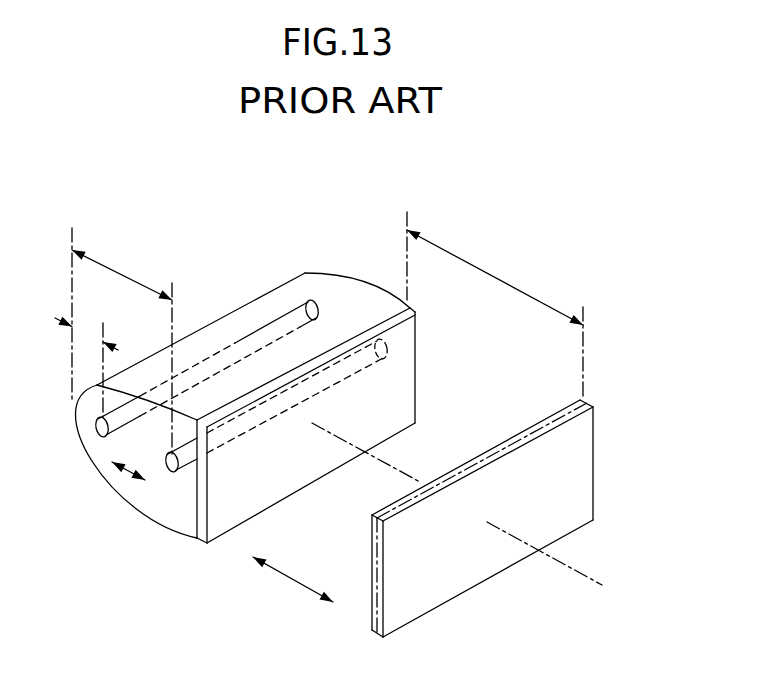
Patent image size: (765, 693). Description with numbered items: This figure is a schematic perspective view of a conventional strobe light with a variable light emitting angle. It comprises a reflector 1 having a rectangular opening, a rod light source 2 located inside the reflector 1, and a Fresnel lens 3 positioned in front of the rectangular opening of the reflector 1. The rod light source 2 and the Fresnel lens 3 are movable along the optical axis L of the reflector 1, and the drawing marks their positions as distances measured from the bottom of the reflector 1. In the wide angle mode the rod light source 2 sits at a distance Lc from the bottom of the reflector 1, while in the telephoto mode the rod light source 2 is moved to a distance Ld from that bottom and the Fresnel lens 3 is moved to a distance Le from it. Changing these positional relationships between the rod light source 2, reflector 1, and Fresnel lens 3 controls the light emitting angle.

The reflector 1 is at (363, 280).
The rod light source 2 is at (92, 443).
The Fresnel lens 3 is at (538, 423).
The optical axis L is at (570, 563).
The distance Lc is at (128, 278).
The distance Ld is at (88, 332).
The distance Le is at (503, 280).